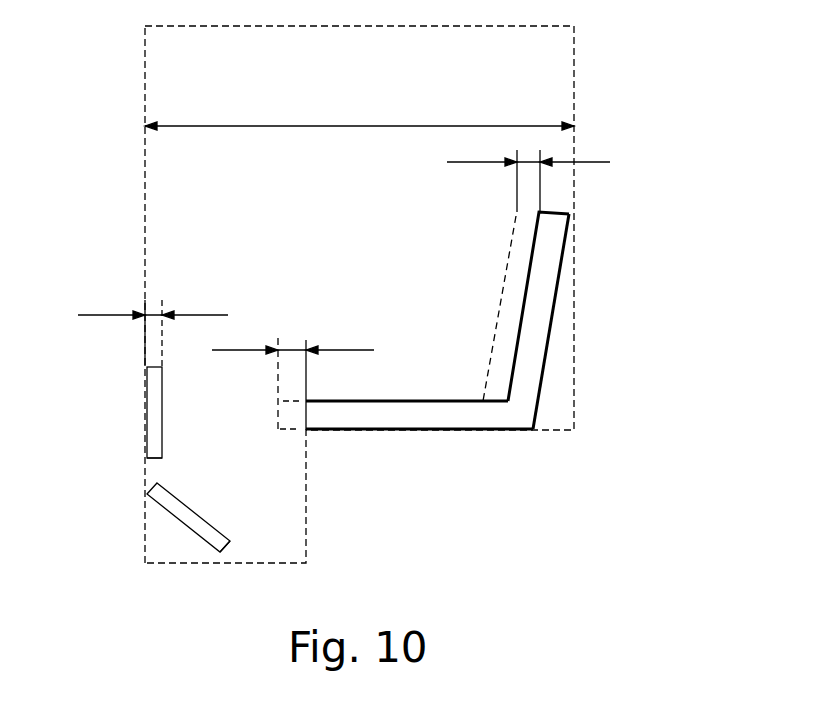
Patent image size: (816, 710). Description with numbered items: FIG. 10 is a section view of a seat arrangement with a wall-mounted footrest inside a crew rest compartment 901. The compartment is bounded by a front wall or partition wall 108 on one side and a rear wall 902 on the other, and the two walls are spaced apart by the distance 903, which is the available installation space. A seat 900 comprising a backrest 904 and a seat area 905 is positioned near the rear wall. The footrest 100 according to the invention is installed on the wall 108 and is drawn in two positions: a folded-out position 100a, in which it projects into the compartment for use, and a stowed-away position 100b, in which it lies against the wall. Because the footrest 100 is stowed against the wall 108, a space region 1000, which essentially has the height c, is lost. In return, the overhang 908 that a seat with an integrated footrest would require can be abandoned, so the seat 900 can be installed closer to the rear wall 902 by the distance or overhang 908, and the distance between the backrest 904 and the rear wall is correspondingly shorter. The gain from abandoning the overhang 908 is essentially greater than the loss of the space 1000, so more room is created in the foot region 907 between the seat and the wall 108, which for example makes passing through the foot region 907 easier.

The footrest 100 is at (152, 413).
The folded-out position 100a is at (243, 552).
The stowed-away position 100b is at (150, 472).
The front wall or partition wall 108 is at (143, 188).
The seat 900 is at (497, 356).
The crew rest compartment 901 is at (594, 116).
The rear wall 902 is at (576, 265).
The distance 903 is at (272, 125).
The backrest 904 is at (548, 344).
The seat area 905 is at (478, 431).
The foot region 907 is at (250, 498).
The overhang 908 is at (512, 144).
The space region 1000 is at (156, 302).